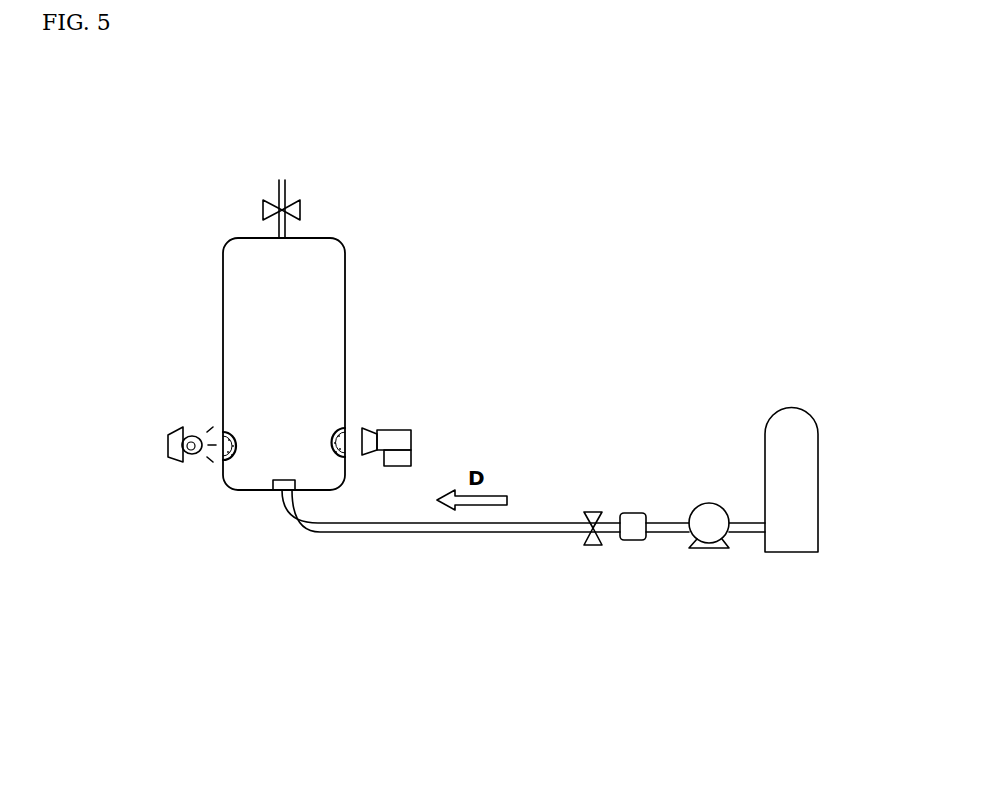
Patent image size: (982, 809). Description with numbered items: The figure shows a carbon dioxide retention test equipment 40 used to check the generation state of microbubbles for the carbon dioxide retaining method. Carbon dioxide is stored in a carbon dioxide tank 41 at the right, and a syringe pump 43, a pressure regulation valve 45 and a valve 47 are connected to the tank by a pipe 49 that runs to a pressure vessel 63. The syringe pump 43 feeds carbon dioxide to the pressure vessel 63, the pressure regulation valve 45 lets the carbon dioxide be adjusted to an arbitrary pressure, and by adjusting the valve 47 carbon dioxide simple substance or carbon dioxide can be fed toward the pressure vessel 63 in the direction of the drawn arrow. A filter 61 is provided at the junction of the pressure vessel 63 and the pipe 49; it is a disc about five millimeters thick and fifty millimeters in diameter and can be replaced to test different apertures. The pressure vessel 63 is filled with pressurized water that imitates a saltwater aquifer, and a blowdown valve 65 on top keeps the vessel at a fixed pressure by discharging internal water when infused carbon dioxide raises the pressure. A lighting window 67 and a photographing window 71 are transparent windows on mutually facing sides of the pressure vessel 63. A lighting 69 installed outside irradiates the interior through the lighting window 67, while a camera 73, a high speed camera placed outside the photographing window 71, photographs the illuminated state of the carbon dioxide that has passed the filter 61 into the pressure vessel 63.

The carbon dioxide retention test equipment 40 is at (547, 252).
The carbon dioxide tank 41 is at (792, 545).
The syringe pump 43 is at (708, 548).
The pressure regulation valve 45 is at (628, 542).
The valve 47 is at (590, 547).
The pipe 49 is at (500, 527).
The filter 61 is at (278, 492).
The pressure vessel 63 is at (242, 252).
The blowdown valve 65 is at (270, 203).
The lighting window 67 is at (224, 435).
The lighting 69 is at (174, 440).
The photographing window 71 is at (352, 430).
The camera 73 is at (400, 455).